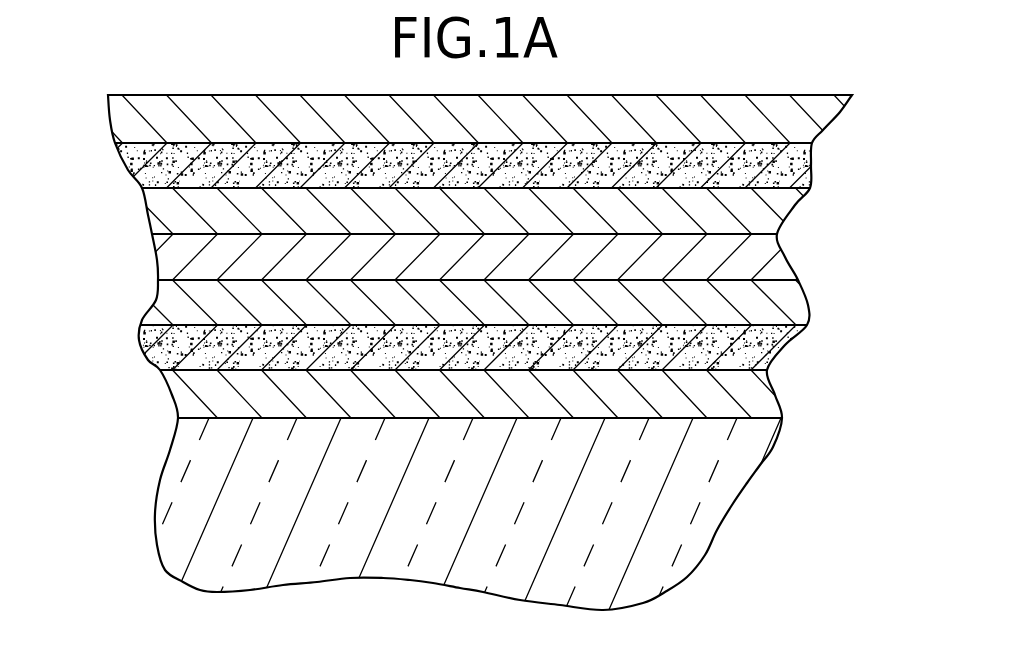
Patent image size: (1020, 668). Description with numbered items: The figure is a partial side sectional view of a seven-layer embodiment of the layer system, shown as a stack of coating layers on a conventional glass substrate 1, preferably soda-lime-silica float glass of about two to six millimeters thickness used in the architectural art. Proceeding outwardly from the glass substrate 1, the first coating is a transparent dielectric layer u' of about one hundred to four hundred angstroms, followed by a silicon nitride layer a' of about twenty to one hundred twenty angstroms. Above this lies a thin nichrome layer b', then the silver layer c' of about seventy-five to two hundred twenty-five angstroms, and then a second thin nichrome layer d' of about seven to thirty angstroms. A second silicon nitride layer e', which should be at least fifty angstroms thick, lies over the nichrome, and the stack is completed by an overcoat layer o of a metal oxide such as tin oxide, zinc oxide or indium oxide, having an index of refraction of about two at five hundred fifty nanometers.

The overcoat layer o is at (123, 117).
The Si3N4 layer e' is at (478, 165).
The nichrome layer d' is at (484, 211).
The silver layer c' is at (484, 257).
The nichrome layer b' is at (484, 302).
The Si3N4 layer a' is at (484, 347).
The transparent dielectric layer u' is at (484, 394).
The glass substrate 1 is at (174, 510).